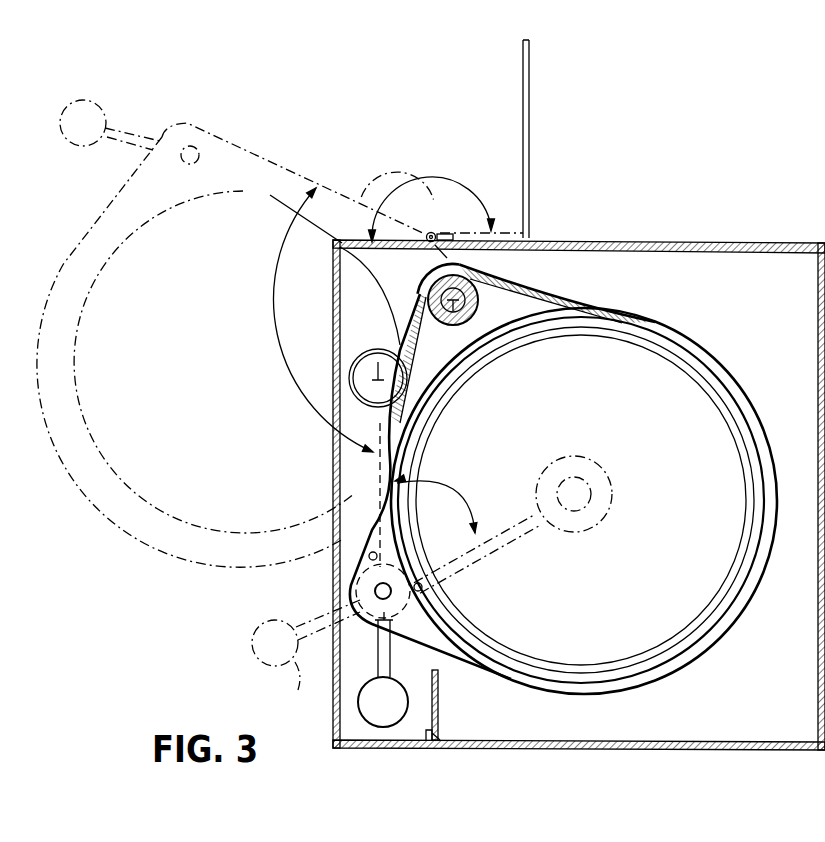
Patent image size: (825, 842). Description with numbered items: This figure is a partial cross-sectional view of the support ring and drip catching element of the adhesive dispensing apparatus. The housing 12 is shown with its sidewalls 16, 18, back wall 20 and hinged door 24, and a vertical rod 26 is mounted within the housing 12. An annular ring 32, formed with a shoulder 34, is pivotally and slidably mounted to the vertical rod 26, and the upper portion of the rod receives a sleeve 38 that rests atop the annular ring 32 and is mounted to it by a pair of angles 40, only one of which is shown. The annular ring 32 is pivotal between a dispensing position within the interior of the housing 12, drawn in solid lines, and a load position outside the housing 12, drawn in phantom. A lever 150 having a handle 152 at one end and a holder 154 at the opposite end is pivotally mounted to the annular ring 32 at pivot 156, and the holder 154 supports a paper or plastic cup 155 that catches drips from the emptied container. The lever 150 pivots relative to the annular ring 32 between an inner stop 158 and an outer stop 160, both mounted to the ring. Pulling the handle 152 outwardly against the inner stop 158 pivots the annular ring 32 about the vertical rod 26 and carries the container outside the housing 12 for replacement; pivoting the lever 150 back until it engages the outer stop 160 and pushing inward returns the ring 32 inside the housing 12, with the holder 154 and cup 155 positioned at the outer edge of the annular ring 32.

The housing 12 is at (579, 483).
The sidewall 16 is at (668, 242).
The sidewall 18 is at (629, 751).
The back wall 20 is at (818, 345).
The hinged door 24 is at (531, 90).
The vertical rod 26 is at (461, 323).
The annular ring 32 is at (730, 363).
The shoulder 34 is at (748, 425).
The sleeve 38 is at (477, 311).
The angle 40 is at (407, 335).
The lever 150 is at (378, 660).
The handle 152 is at (370, 704).
The holder 154 is at (352, 352).
The cup 155 is at (384, 352).
The pivot 156 is at (375, 592).
The inner stop 158 is at (422, 589).
The outer stop 160 is at (369, 558).